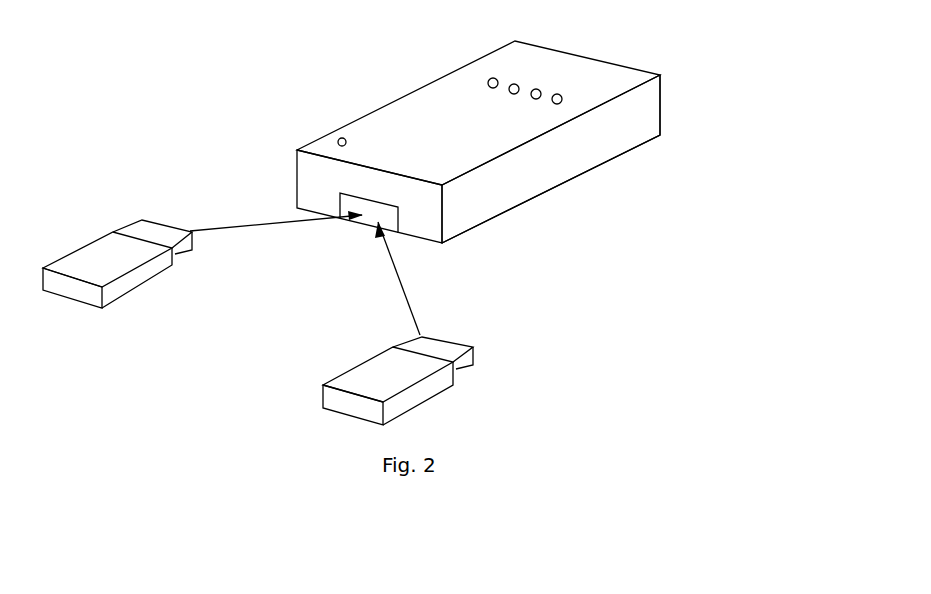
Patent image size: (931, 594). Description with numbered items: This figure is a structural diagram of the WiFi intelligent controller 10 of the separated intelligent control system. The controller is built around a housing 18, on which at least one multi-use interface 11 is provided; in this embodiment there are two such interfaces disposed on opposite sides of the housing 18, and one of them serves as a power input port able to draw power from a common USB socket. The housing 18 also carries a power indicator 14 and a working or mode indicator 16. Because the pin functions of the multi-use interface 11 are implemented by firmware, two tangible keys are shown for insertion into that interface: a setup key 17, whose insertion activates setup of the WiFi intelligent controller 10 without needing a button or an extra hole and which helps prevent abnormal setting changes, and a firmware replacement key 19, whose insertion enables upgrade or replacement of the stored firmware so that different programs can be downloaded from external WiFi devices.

The WiFi intelligent controller 10 is at (662, 97).
The multi-use interface 11 is at (377, 203).
The power indicator 14 is at (336, 143).
The working or mode indicator 16 is at (487, 88).
The setup key 17 is at (95, 263).
The housing 18 is at (563, 168).
The firmware replacement key 19 is at (412, 373).